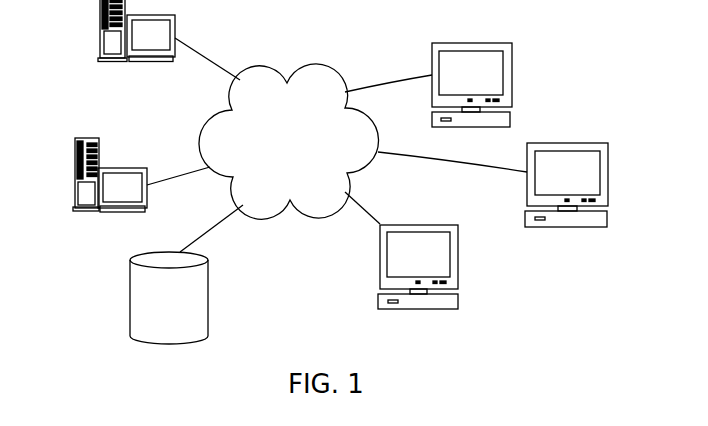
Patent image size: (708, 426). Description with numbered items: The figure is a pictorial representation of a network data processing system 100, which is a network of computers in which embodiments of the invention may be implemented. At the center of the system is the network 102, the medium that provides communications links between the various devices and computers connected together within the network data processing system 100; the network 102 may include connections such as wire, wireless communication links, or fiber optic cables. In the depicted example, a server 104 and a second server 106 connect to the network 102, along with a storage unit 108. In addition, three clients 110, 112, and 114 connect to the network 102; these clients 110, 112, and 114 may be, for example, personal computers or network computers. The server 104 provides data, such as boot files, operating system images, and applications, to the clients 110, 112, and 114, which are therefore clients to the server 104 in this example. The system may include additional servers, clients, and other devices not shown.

The network data processing system 100 is at (315, 260).
The network 102 is at (306, 171).
The server 104 is at (103, 25).
The server 106 is at (76, 182).
The storage unit 108 is at (130, 297).
The client 110 is at (512, 70).
The client 112 is at (608, 172).
The client 114 is at (458, 258).